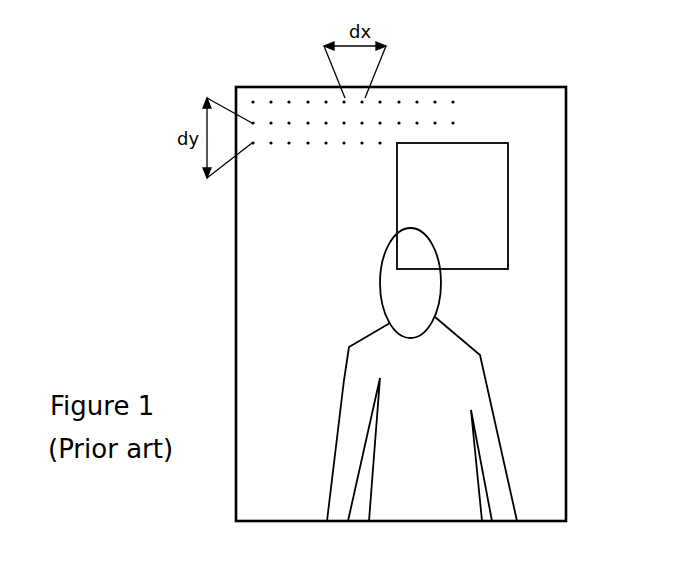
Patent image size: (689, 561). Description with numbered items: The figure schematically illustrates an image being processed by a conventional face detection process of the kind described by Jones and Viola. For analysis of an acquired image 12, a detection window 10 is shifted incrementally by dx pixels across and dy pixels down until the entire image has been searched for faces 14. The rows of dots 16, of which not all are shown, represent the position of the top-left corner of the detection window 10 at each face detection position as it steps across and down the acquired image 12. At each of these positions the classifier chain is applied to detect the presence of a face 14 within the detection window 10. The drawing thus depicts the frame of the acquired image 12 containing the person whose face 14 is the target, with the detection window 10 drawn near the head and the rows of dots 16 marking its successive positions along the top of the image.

The detection window 10 is at (466, 220).
The acquired image 12 is at (401, 289).
The face 14 is at (423, 295).
The rows of dots 16 is at (303, 150).